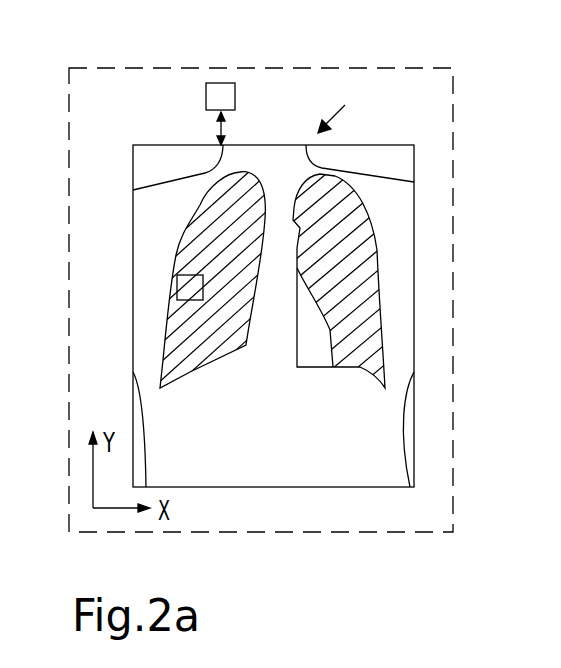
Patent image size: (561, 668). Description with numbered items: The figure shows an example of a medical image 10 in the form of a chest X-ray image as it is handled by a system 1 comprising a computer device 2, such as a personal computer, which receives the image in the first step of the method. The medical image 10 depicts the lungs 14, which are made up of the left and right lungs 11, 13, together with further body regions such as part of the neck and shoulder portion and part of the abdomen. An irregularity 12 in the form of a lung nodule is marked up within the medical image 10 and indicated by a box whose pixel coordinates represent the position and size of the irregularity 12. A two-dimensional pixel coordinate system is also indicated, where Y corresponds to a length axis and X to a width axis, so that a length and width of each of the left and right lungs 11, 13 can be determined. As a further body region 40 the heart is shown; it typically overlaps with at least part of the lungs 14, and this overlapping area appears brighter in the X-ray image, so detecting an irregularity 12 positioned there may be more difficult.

The system 1 is at (318, 63).
The computer device 2 is at (222, 82).
The medical image 10 is at (399, 145).
The left lung 11 is at (206, 213).
The irregularity 12 is at (190, 300).
The right lung 13 is at (370, 223).
The lungs 14 is at (344, 100).
The further body region 40 is at (313, 345).